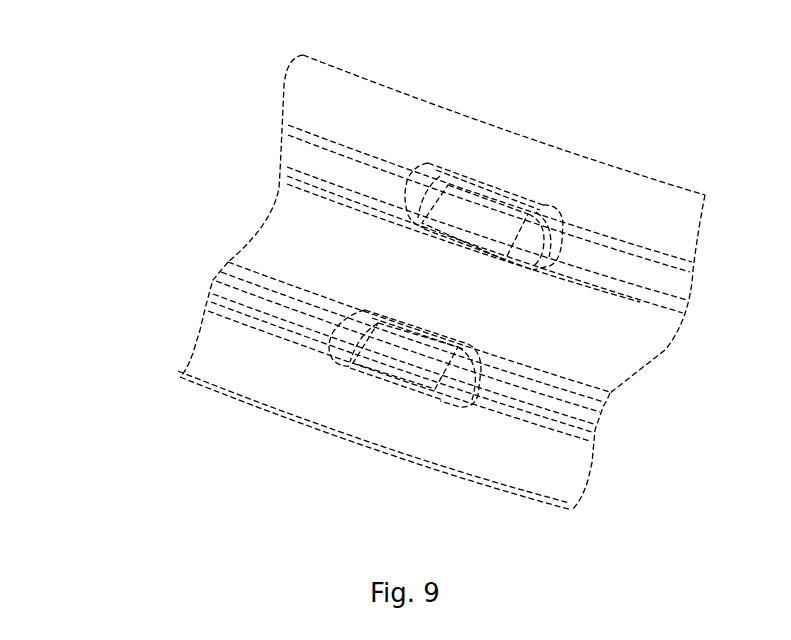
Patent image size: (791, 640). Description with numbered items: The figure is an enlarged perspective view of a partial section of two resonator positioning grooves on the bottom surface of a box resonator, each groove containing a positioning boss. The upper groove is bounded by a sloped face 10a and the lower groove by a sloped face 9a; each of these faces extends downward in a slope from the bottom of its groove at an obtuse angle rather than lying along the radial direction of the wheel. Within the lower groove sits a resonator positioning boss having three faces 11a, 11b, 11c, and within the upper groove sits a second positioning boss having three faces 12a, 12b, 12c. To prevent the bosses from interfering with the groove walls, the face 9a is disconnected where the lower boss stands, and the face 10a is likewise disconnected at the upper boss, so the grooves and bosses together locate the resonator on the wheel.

The face of the resonator positioning groove 9a is at (237, 307).
The face of the resonator positioning groove 10a is at (307, 158).
The face of the resonator positioning boss 11a is at (480, 392).
The face of the resonator positioning boss 11b is at (402, 365).
The face of the resonator positioning boss 11c is at (347, 338).
The face of the resonator positioning boss 12a is at (536, 261).
The face of the resonator positioning boss 12b is at (483, 207).
The face of the resonator positioning boss 12c is at (413, 195).